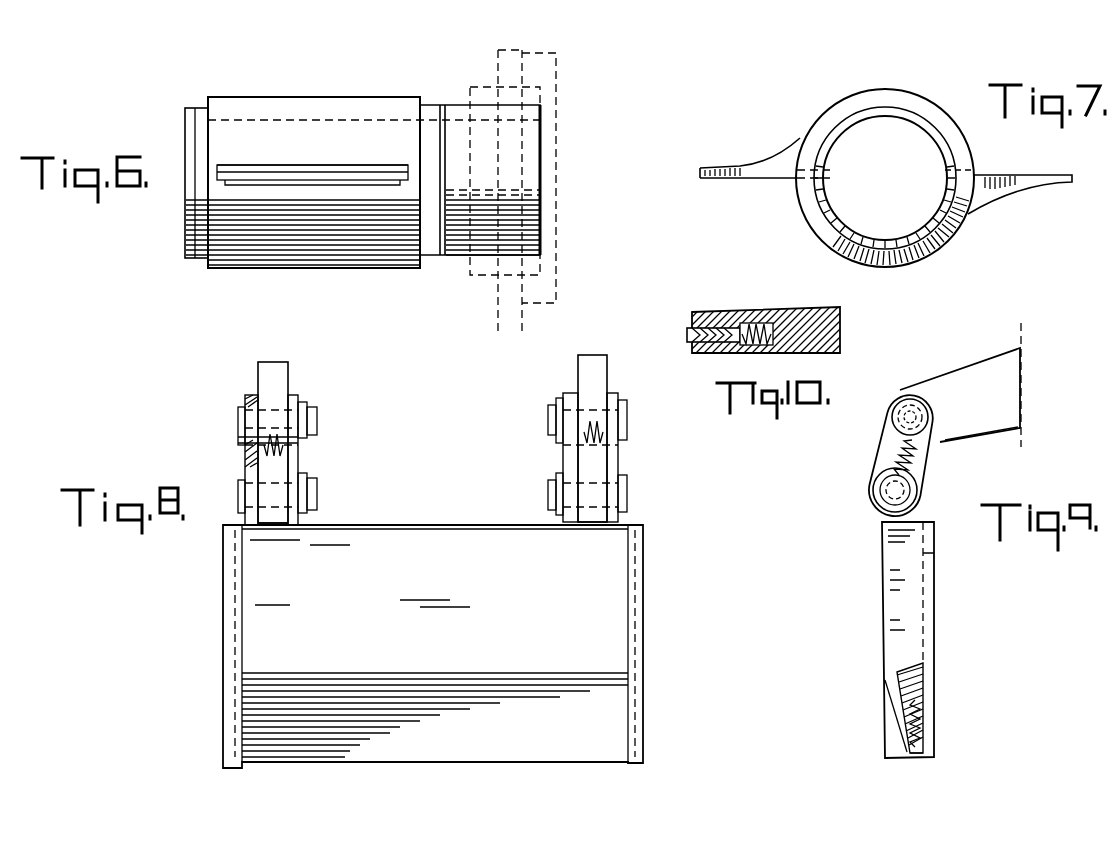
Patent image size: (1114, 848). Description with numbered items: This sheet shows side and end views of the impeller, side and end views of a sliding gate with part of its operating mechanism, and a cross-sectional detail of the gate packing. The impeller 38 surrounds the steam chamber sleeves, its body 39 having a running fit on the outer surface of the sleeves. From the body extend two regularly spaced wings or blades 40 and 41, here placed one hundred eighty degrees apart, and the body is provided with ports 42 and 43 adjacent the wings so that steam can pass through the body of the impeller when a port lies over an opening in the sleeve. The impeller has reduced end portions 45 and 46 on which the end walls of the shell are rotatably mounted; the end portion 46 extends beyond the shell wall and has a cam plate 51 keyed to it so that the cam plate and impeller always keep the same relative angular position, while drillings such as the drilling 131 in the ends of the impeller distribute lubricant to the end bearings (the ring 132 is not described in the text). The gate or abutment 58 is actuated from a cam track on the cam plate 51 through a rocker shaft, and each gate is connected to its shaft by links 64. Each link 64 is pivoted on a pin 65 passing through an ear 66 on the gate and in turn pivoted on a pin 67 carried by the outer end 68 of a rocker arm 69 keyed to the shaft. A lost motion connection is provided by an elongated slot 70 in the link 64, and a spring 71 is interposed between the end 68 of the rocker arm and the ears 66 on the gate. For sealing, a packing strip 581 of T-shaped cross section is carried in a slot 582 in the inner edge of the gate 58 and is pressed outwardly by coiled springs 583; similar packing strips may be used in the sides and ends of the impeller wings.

In FIG. 6, the impeller 38 is at (363, 169).
In FIG. 7, the impeller 38 is at (885, 165).
In FIG. 6, the body 39 is at (312, 155).
In FIG. 7, the body 39 is at (918, 99).
In FIG. 6, the wing 40 is at (371, 165).
In FIG. 7, the wing 40 is at (757, 166).
In FIG. 7, the wing 41 is at (1060, 175).
In FIG. 6, the port 42 is at (250, 186).
In FIG. 7, the port 42 is at (795, 186).
In FIG. 7, the port 43 is at (980, 170).
In FIG. 6, the reduced end portion 45 is at (197, 260).
In FIG. 6, the reduced end portion 46 is at (455, 258).
In FIG. 6, the cam plate 51 is at (498, 78).
In FIG. 6, the drilling 131 is at (197, 108).
In FIG. 6, the ring 132 is at (441, 105).
In FIG. 9, the gate 58 is at (883, 594).
In FIG. 8, the gate 58 is at (433, 646).
In FIG. 9, the link 64 is at (878, 447).
In FIG. 8, the link 64 is at (245, 457).
In FIG. 9, the pin 65 is at (873, 496).
In FIG. 8, the pin 65 is at (320, 490).
In FIG. 8, the ear 66 is at (270, 520).
In FIG. 9, the pin 67 is at (898, 413).
In FIG. 8, the pin 67 is at (318, 421).
In FIG. 9, the outer end 68 is at (960, 395).
In FIG. 8, the outer end 68 is at (292, 376).
In FIG. 9, the rocker arm 69 is at (1010, 356).
In FIG. 9, the elongated slot 70 is at (950, 440).
In FIG. 8, the elongated slot 70 is at (273, 438).
In FIG. 9, the spring 71 is at (925, 456).
In FIG. 8, the spring 71 is at (283, 458).
In FIG. 10, the packing strip 581 is at (692, 331).
In FIG. 9, the packing strip 581 is at (915, 756).
In FIG. 10, the slot 582 is at (753, 353).
In FIG. 9, the slot 582 is at (921, 720).
In FIG. 10, the coiled spring 583 is at (768, 312).
In FIG. 9, the coiled spring 583 is at (910, 707).